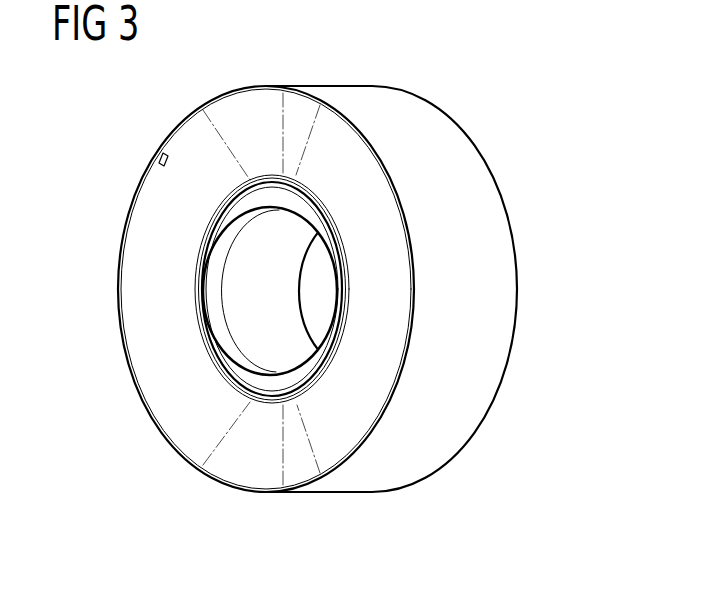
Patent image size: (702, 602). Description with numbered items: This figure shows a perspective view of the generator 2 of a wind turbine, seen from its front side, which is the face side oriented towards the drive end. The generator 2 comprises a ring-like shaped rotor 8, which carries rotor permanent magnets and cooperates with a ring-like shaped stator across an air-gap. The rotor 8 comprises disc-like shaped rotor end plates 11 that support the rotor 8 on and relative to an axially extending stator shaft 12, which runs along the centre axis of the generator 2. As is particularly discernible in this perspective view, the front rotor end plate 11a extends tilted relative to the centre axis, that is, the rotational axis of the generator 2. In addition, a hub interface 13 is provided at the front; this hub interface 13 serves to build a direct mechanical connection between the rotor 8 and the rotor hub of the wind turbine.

The generator 2 is at (322, 293).
The rotor 8 is at (518, 227).
The rotor end plates 11 is at (182, 460).
The front rotor end plate 11a is at (177, 423).
The stator shaft 12 is at (208, 270).
The hub interface 13 is at (238, 392).